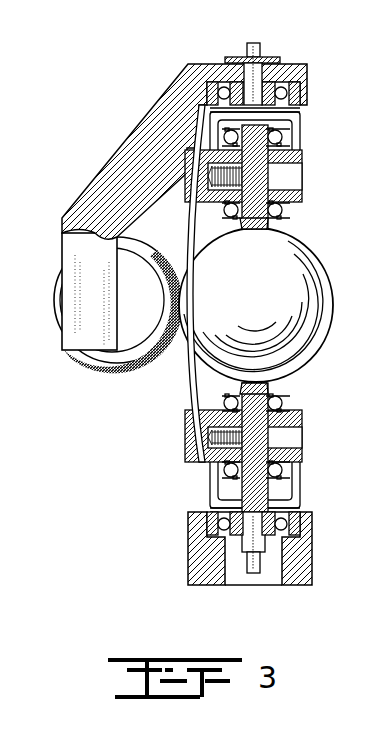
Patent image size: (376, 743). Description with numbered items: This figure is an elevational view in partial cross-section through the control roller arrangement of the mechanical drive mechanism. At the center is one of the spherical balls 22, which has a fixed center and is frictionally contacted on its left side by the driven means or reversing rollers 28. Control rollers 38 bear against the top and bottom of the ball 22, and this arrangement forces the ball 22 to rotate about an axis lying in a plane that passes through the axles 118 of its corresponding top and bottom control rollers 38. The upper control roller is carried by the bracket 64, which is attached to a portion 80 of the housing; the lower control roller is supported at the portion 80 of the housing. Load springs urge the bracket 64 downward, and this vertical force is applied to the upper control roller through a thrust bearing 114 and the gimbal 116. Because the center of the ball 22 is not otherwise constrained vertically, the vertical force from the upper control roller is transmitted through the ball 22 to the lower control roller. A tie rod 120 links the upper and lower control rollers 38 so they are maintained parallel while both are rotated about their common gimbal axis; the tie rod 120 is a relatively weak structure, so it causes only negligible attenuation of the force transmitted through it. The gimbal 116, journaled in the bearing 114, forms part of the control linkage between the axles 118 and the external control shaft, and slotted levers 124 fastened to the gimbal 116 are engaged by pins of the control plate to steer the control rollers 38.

The spherical ball 22 is at (261, 295).
The driven means (reversing rollers) 28 is at (120, 362).
The control roller 38 is at (268, 228).
The bracket 64 is at (181, 95).
The portion of the housing 80 is at (312, 548).
The thrust bearing 114 is at (297, 92).
The gimbal 116 is at (295, 128).
The axle 118 is at (303, 160).
The tie rod 120 is at (194, 378).
The slotted lever 124 is at (240, 58).